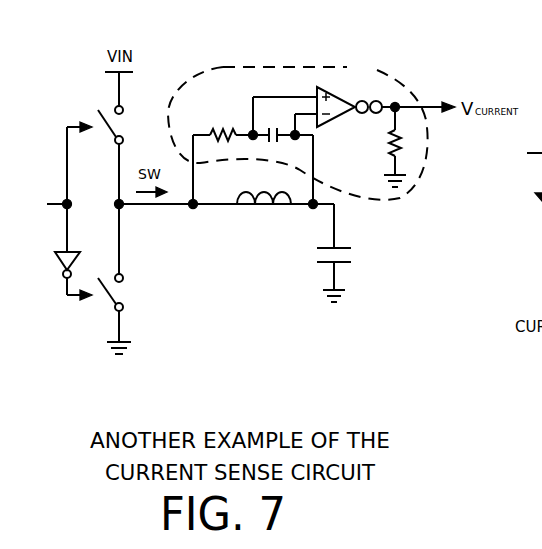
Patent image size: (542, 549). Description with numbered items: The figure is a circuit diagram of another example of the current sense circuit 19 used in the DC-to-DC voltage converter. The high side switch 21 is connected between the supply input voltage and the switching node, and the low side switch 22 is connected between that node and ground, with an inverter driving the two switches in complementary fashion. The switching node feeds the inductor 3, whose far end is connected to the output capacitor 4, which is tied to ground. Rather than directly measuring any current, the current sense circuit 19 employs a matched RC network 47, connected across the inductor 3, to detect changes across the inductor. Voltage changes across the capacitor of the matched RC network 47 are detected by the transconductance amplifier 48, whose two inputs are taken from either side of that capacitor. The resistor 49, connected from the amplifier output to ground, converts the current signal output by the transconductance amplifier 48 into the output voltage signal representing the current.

The inductor 3 is at (258, 206).
The output capacitor 4 is at (315, 258).
The current sense circuit 19 is at (371, 69).
The high side switch HSS 21 is at (132, 126).
The low side switch LSS 22 is at (131, 295).
The matched RC network 47 is at (241, 108).
The transconductance amplifier 48 is at (341, 97).
The resistor 49 is at (386, 144).